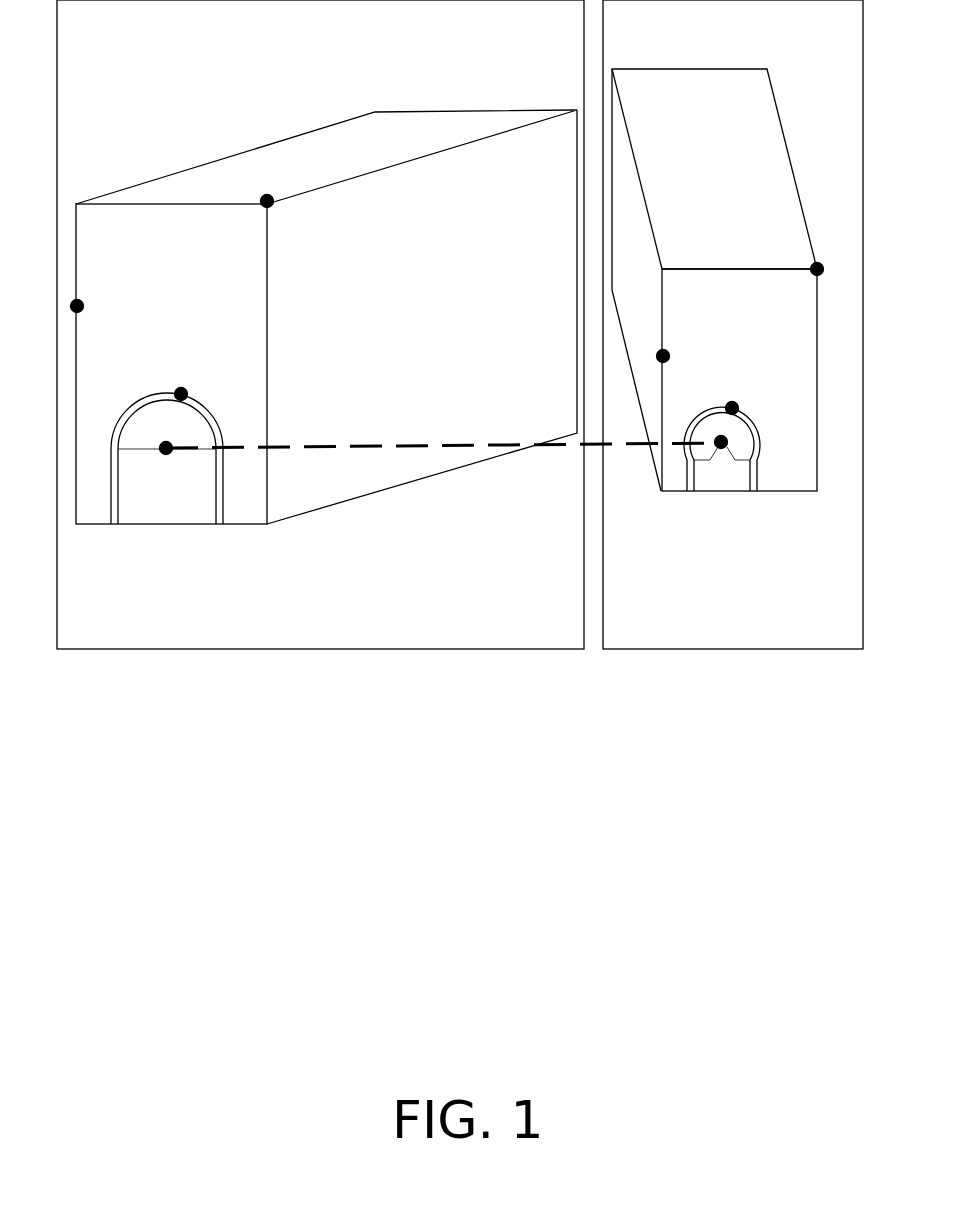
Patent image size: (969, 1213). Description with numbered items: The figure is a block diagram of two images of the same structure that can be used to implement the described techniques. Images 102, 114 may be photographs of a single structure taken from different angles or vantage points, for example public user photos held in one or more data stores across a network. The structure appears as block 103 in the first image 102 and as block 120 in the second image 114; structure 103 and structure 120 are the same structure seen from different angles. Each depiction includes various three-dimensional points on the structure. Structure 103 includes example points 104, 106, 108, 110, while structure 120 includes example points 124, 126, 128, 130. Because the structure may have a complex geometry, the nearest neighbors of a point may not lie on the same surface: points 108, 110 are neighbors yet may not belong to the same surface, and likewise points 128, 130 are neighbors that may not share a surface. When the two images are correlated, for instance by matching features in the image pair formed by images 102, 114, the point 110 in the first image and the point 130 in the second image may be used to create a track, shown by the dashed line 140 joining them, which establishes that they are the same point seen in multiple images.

The image 102 is at (310, 648).
The image 114 is at (713, 648).
The structure 103 is at (313, 148).
The three-dimensional point 104 is at (82, 303).
The three-dimensional point 106 is at (270, 198).
The three-dimensional point 108 is at (186, 391).
The three-dimensional point 110 is at (169, 452).
The dashed line 140 is at (420, 447).
The structure 120 is at (716, 186).
The three-dimensional point 124 is at (667, 352).
The three-dimensional point 126 is at (821, 266).
The three-dimensional point 128 is at (737, 405).
The three-dimensional point 130 is at (724, 447).